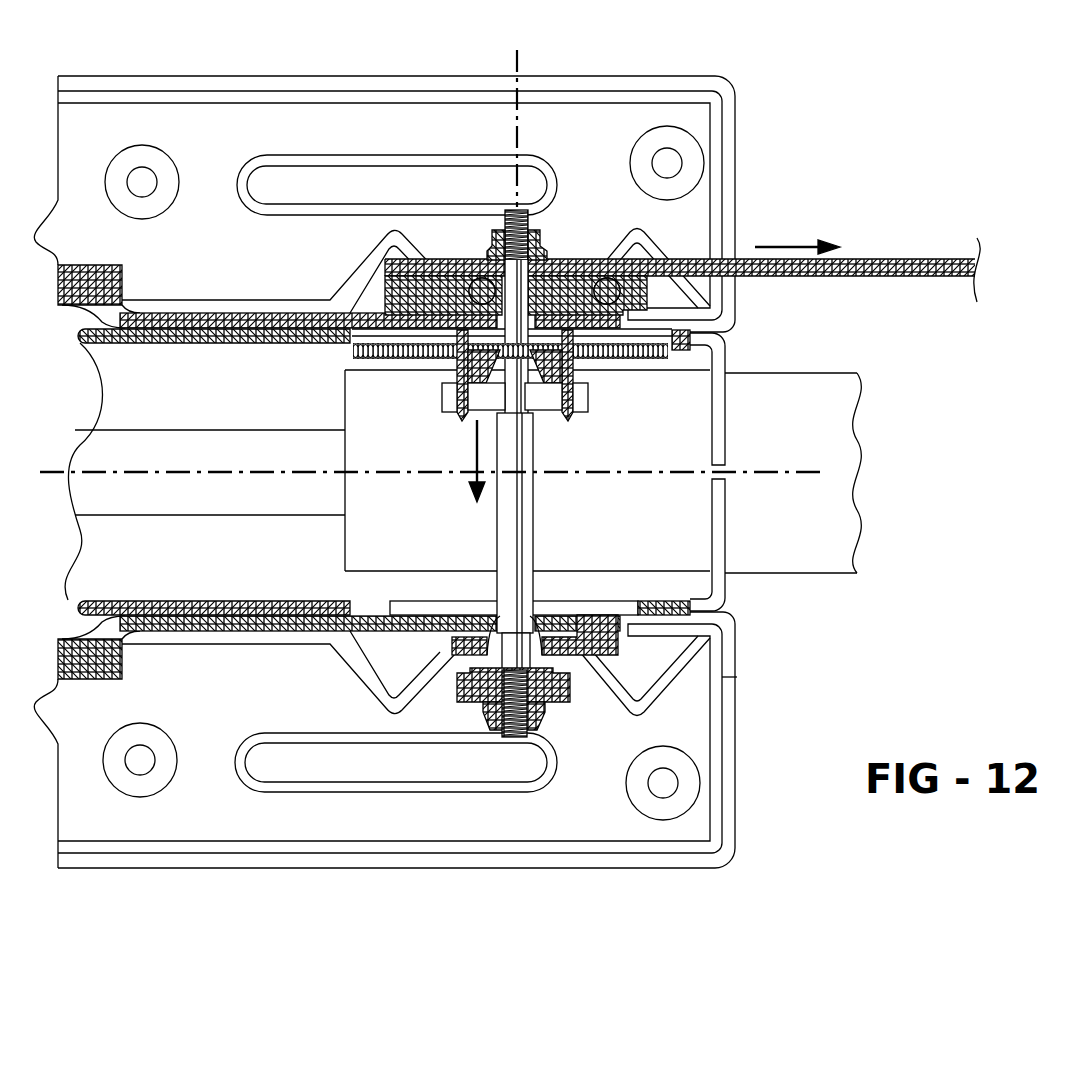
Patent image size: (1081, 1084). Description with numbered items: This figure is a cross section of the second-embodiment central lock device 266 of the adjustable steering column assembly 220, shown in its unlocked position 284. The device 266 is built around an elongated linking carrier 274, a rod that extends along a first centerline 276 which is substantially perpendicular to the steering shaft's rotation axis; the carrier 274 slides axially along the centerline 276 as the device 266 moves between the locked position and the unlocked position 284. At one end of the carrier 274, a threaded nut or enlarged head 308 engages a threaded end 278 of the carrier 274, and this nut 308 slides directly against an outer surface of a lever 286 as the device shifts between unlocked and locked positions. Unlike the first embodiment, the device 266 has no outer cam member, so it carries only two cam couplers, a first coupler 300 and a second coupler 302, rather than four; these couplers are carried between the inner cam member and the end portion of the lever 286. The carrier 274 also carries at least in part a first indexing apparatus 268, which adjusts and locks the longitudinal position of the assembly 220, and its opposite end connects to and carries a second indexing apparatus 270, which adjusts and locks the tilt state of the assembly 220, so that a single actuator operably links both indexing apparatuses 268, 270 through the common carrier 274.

The adjustable steering column assembly 220 is at (531, 444).
The central lock device 266 is at (531, 472).
The unlocked position 284 is at (872, 185).
The lever 286 is at (918, 258).
The first centerline 276 is at (517, 102).
The threaded end 278 is at (536, 218).
The second cam coupler 302 is at (574, 257).
The threaded nut 308 is at (526, 216).
The first cam coupler 300 is at (452, 282).
The first indexing apparatus 268 is at (594, 372).
The carrier 274 is at (515, 545).
The second indexing apparatus 270 is at (558, 706).